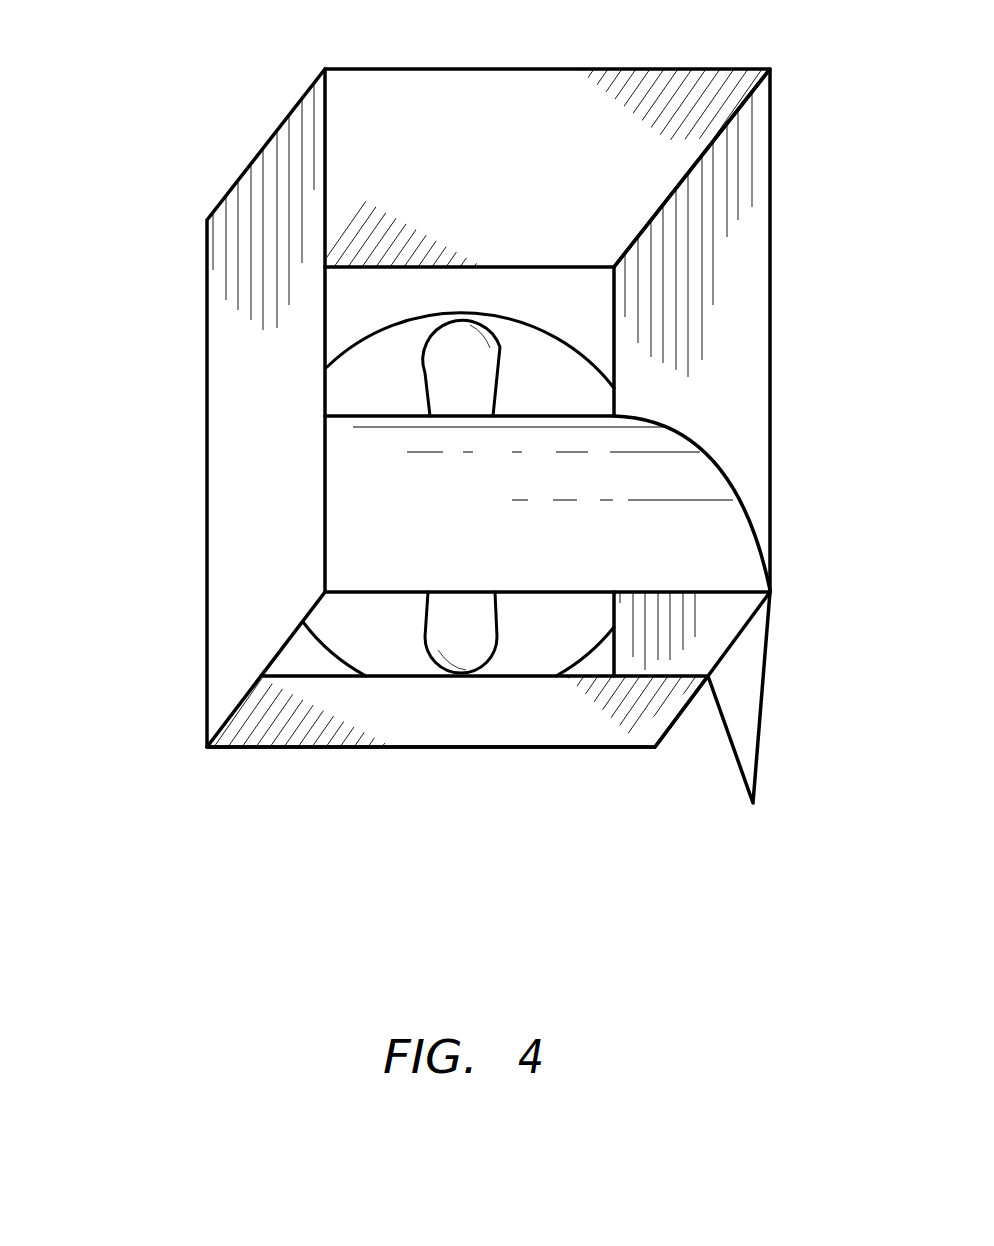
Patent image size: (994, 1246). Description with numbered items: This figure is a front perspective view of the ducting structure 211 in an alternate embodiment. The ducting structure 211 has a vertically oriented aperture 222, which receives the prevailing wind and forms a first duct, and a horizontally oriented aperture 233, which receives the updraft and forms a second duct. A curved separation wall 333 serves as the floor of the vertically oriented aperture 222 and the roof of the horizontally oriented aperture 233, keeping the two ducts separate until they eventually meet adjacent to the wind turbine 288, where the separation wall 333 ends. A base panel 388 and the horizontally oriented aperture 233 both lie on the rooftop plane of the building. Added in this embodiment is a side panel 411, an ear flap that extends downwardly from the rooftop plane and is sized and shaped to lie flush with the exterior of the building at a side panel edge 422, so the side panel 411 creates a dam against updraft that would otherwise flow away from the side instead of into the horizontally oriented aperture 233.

The ducting structure 211 is at (140, 70).
The vertically oriented aperture 222 is at (646, 339).
The wind turbine 288 is at (503, 368).
The curved separation wall 333 is at (693, 488).
The horizontally oriented aperture 233 is at (300, 658).
The base panel 388 is at (467, 714).
The side panel 411 is at (748, 675).
The side panel edge 422 is at (728, 766).